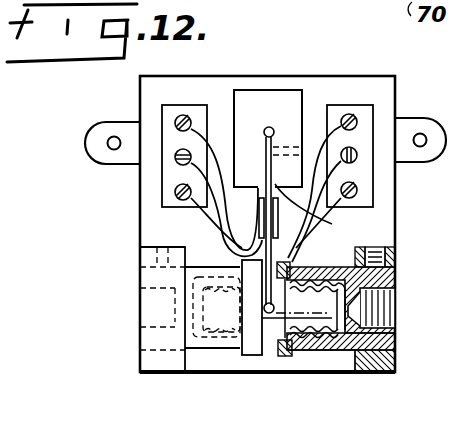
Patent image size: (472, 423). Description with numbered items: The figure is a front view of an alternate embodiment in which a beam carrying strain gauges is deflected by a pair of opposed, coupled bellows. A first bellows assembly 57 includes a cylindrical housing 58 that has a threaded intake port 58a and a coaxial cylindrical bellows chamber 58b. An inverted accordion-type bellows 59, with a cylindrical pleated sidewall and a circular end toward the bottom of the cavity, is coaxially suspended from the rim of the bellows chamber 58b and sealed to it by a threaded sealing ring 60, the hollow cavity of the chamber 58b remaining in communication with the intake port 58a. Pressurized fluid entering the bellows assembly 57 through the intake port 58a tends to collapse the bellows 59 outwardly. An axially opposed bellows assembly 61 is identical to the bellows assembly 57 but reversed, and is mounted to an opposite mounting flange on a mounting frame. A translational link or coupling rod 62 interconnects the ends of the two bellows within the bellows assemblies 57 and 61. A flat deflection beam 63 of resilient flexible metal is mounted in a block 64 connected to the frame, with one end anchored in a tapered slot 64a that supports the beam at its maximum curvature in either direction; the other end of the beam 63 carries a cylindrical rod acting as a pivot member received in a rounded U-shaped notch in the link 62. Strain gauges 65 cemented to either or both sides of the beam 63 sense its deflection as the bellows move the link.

The first bellows assembly 57 is at (336, 360).
The cylindrical housing 58 is at (393, 280).
The threaded intake port 58a is at (390, 302).
The cylindrical bellows chamber 58b is at (338, 252).
The bellows 59 is at (305, 336).
The threaded sealing ring 60 is at (283, 320).
The axially opposed bellows assembly 61 is at (200, 364).
The coupling rod 62 is at (258, 370).
The deflection beam 63 is at (276, 144).
The block 64 is at (262, 97).
The tapered slot 64a is at (323, 210).
The strain gauges 65 is at (260, 205).